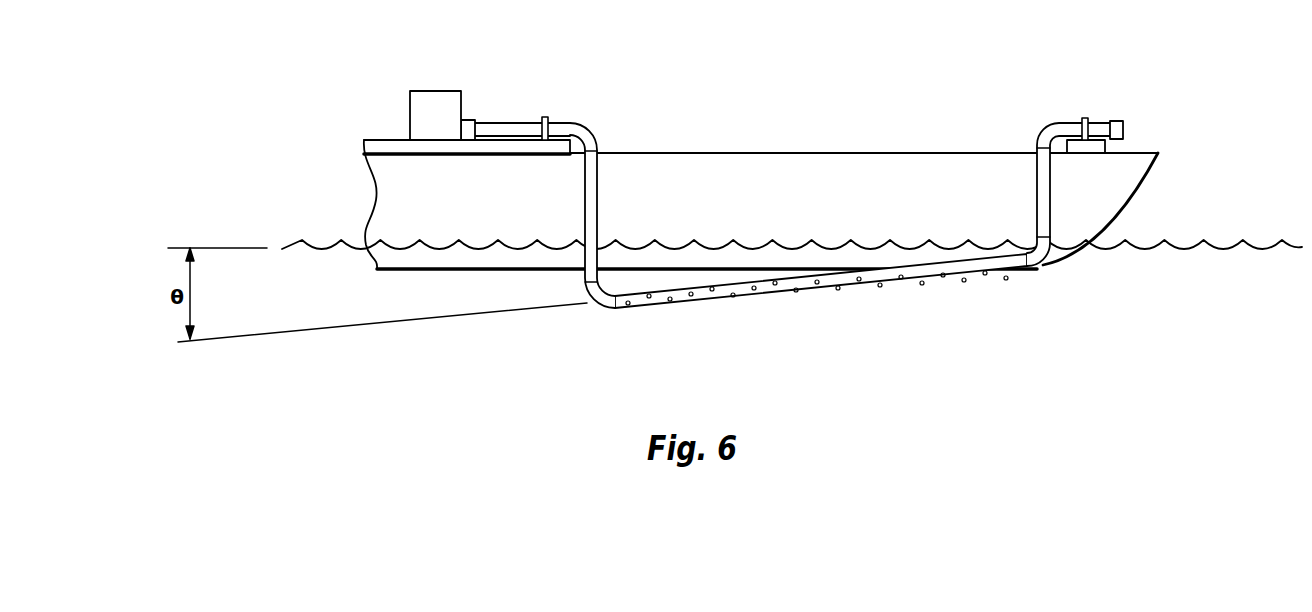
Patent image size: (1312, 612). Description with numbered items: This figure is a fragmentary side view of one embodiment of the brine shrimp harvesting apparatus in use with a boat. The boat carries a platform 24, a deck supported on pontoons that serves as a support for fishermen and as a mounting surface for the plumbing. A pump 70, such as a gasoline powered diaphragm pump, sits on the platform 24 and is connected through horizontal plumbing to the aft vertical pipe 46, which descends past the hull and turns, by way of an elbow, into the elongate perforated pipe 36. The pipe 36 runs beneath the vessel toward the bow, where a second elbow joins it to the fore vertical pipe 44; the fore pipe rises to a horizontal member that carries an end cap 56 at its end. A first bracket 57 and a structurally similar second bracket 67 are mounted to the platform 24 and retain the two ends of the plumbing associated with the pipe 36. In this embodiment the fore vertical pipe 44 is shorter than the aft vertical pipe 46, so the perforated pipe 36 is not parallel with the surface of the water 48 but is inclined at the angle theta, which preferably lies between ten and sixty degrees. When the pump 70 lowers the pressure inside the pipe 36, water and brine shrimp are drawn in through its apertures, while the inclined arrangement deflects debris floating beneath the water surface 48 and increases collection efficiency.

The platform 24 is at (390, 147).
The perforated pipe 36 is at (830, 274).
The fore vertical pipe 44 is at (1047, 200).
The aft vertical pipe 46 is at (597, 187).
The water surface 48 is at (1220, 245).
The end cap 56 is at (1118, 122).
The first bracket 57 is at (1083, 118).
The second bracket 67 is at (543, 119).
The pump 70 is at (435, 115).